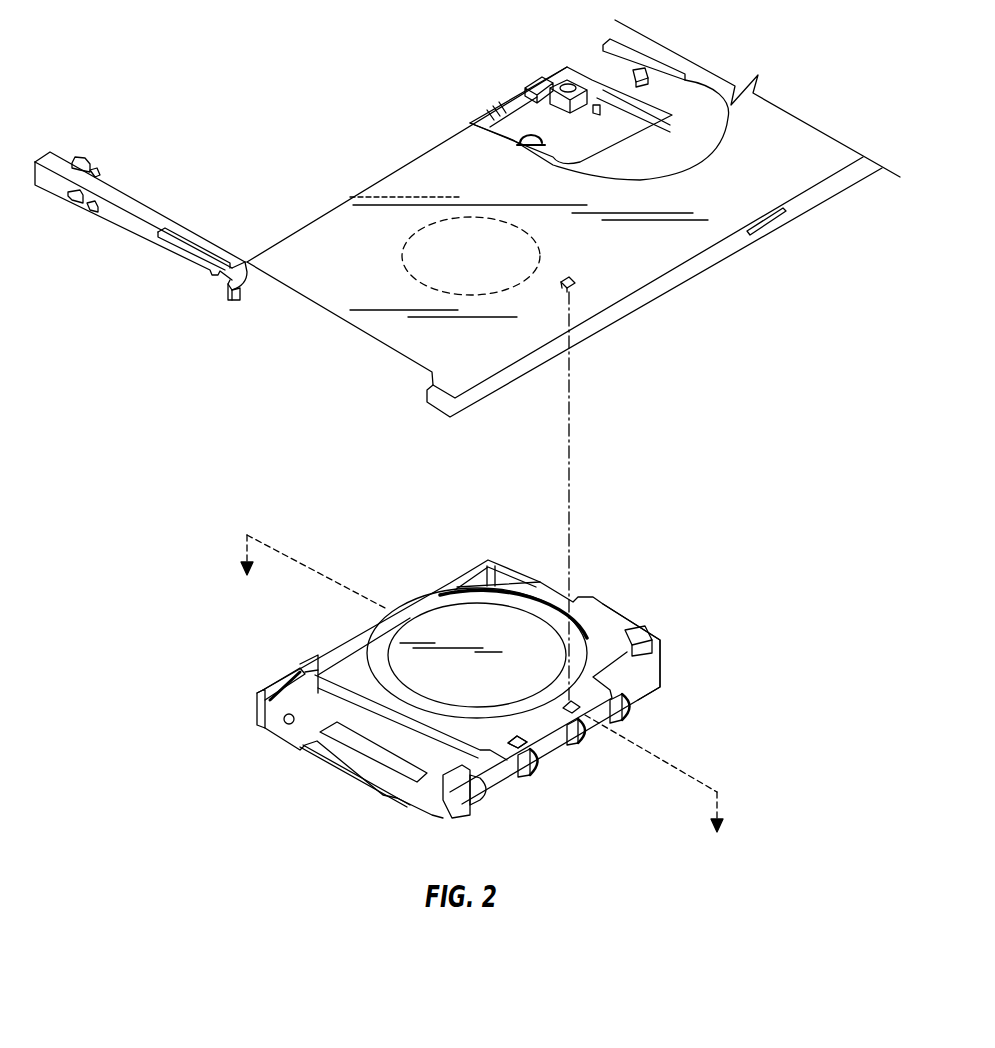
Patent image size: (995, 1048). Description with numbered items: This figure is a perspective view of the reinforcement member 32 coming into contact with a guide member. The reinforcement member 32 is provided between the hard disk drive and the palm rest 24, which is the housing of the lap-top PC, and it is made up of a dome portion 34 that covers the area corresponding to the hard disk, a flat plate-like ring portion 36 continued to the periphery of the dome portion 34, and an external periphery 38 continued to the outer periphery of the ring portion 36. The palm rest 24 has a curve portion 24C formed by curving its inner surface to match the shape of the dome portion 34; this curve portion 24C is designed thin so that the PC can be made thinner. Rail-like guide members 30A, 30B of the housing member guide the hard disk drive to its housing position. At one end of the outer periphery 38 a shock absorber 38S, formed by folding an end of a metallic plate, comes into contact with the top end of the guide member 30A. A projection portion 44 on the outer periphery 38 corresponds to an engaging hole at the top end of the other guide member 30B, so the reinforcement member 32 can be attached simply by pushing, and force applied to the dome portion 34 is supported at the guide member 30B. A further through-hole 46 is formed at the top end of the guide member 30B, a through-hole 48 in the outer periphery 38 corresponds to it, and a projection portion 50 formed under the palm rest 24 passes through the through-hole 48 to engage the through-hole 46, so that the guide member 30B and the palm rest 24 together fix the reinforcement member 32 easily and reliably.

The palm rest 24 is at (320, 292).
The curve portion 24C is at (412, 242).
The projection portion 50 is at (569, 276).
The reinforcement member 32 is at (640, 580).
The dome portion 34 is at (452, 632).
The ring portion 36 is at (384, 637).
The external periphery 38 is at (625, 628).
The shock absorber 38S is at (307, 662).
The guide member 30A is at (283, 671).
The guide member 30B is at (498, 795).
The projection portion 44 is at (543, 752).
The through-hole 48 is at (585, 715).
The through-hole 46 is at (517, 742).